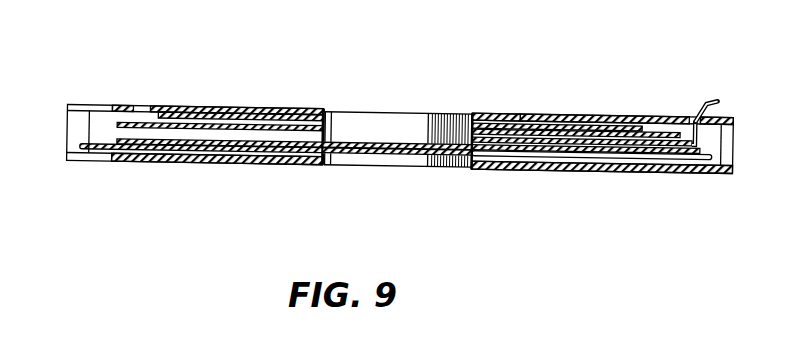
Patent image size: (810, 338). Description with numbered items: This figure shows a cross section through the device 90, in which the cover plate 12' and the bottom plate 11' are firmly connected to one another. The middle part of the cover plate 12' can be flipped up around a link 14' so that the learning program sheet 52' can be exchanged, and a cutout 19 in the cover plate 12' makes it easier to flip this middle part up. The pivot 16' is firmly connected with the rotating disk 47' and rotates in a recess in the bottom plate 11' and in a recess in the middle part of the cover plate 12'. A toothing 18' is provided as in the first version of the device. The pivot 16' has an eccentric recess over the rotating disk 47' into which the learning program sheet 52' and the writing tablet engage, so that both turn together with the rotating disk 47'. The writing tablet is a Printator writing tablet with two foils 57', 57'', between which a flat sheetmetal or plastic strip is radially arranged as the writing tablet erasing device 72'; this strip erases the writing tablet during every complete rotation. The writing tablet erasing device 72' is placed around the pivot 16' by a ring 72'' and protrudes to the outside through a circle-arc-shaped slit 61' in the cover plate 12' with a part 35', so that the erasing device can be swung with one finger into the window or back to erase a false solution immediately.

The device 90 is at (197, 80).
The bottom plate 11' is at (195, 160).
The cutout 19 is at (140, 105).
The learning program sheet 52' is at (220, 94).
The rotating disk 47' is at (220, 177).
The toothing 18' is at (170, 145).
The pivot 16' is at (399, 113).
The ring 72'' is at (397, 177).
The cover plate 12' is at (602, 126).
The link 14' is at (496, 87).
The foil 57' is at (576, 109).
The circle-arc-shaped slit 61' is at (583, 108).
The part 35' is at (733, 96).
The writing tablet erasing device 72' is at (586, 182).
The foil 57'' is at (592, 185).